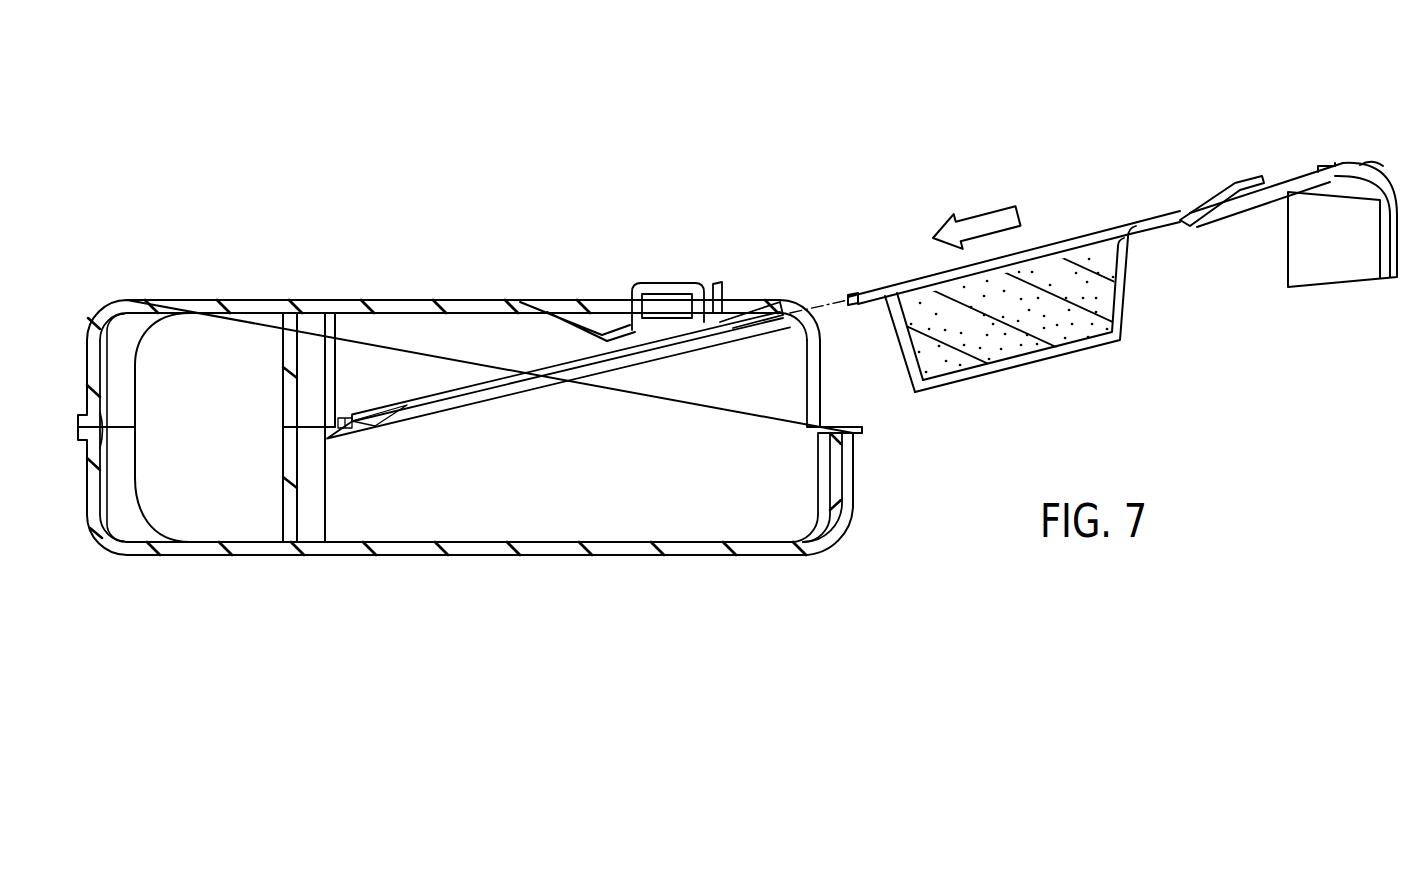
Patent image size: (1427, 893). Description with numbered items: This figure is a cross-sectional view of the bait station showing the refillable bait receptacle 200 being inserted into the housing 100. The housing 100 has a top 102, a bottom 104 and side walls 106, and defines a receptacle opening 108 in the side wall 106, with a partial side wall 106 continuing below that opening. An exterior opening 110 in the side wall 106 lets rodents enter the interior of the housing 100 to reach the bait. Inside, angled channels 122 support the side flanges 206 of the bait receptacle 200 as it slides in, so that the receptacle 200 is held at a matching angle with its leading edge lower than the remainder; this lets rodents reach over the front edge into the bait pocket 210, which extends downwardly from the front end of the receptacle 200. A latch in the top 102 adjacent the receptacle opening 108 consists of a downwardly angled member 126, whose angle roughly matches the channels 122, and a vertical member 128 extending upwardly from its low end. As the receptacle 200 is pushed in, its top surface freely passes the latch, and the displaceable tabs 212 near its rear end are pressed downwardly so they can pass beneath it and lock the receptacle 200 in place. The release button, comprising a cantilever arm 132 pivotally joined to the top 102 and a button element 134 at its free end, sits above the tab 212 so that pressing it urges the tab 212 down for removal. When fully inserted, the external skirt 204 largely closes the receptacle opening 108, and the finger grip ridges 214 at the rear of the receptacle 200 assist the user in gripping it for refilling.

The housing 100 is at (666, 226).
The top 102 is at (344, 300).
The bottom 104 is at (750, 557).
The side walls 106 is at (856, 475).
The receptacle opening 108 is at (826, 386).
The exterior openings 110 is at (220, 492).
The angled channels 122 is at (570, 380).
The downwardly angled member 126 is at (740, 305).
The vertical member 128 is at (718, 285).
The cantilever arm 132 is at (578, 310).
The button element 134 is at (648, 283).
The refillable bait receptacle 200 is at (1336, 118).
The external skirt 204 is at (1400, 200).
The flanges 206 is at (870, 302).
The pocket 210 is at (963, 358).
The displaceable tabs 212 is at (1222, 193).
The finger grip ridges 214 is at (1322, 176).